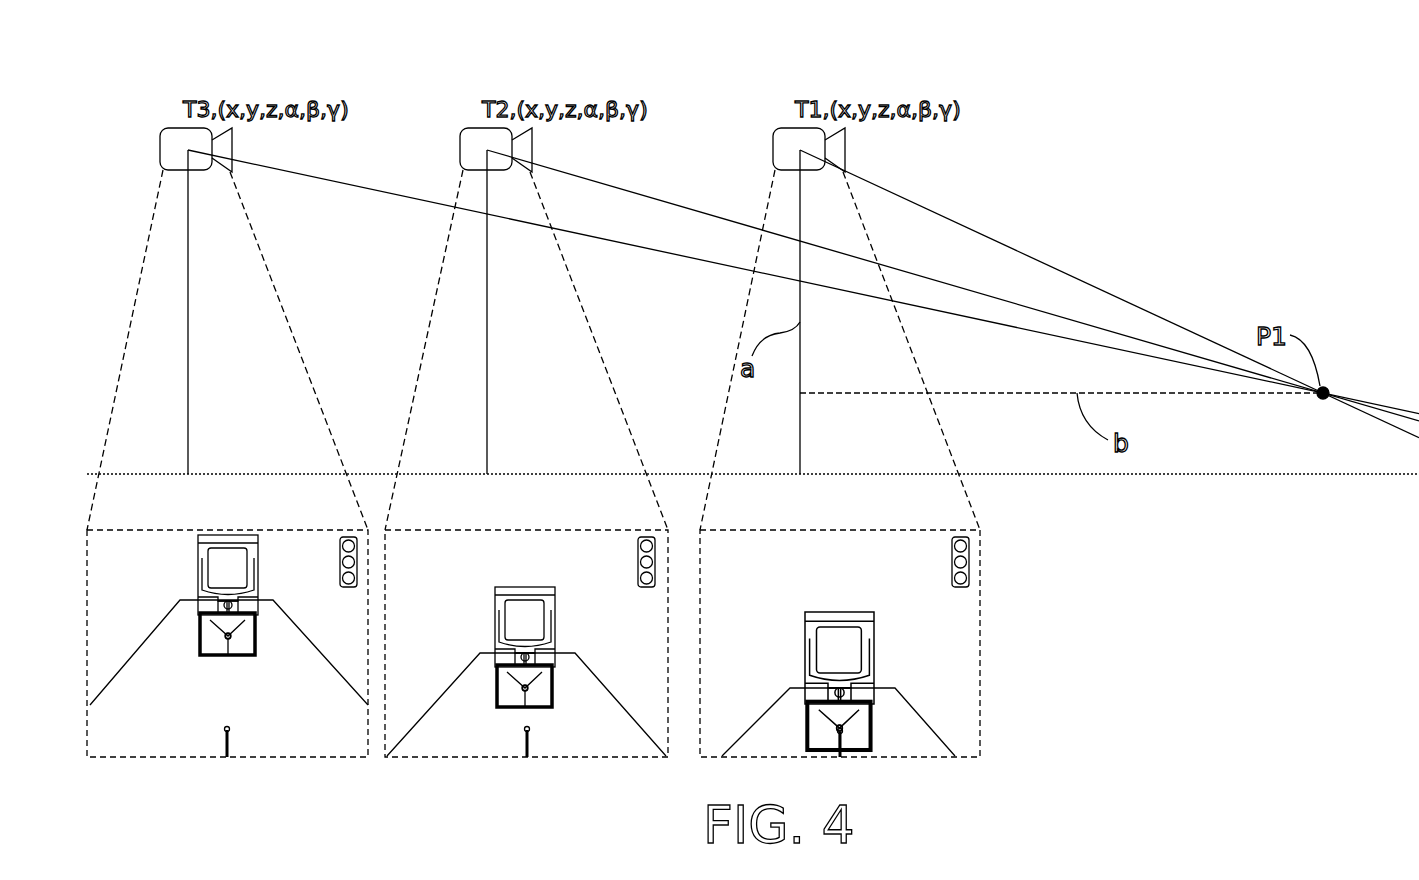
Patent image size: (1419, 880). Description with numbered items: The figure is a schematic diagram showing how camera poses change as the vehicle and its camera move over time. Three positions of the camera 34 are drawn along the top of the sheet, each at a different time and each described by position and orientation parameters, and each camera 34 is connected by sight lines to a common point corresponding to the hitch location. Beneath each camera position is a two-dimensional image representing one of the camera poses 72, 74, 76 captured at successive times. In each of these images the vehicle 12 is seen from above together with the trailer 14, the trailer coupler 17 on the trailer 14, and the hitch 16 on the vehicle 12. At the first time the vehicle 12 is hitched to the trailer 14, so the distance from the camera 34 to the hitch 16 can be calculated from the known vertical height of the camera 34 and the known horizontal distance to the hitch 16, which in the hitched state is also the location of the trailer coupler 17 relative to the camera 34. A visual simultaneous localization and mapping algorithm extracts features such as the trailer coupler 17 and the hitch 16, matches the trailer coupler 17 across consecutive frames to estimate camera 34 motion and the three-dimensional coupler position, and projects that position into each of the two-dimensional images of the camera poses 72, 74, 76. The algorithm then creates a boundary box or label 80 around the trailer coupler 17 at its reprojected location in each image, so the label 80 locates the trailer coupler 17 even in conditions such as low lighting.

The camera 34 is at (185, 138).
The trailer 14 is at (198, 570).
The vehicle 12 is at (340, 562).
The boundary box or label 80 is at (200, 655).
The trailer coupler 17 is at (228, 655).
The hitch 16 is at (225, 730).
The camera pose 72 is at (290, 758).
The camera pose 74 is at (583, 758).
The camera pose 76 is at (933, 758).